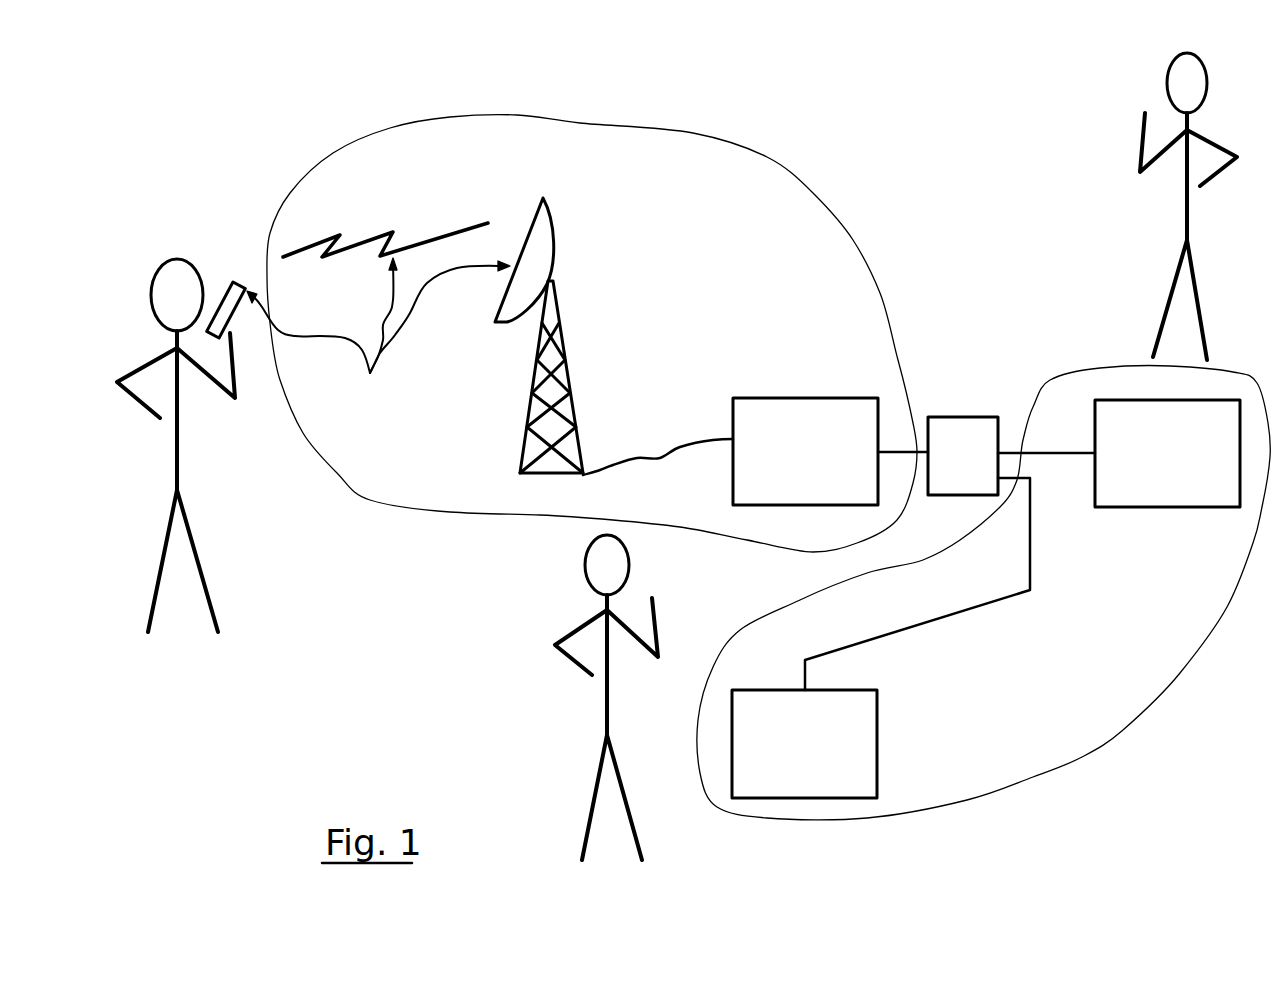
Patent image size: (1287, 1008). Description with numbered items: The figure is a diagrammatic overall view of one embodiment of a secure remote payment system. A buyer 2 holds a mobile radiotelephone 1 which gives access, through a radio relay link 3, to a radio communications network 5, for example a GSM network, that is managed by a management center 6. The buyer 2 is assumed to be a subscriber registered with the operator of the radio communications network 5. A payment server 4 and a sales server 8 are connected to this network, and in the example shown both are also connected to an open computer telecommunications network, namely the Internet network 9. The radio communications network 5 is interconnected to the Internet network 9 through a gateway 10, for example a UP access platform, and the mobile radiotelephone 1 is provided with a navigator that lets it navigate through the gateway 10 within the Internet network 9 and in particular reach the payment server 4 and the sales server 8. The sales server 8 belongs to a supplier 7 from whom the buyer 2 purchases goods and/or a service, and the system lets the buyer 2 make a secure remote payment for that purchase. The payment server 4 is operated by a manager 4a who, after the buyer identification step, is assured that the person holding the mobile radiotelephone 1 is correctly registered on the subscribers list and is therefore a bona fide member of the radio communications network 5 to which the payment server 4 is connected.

The mobile radiotelephone 1 is at (222, 290).
The buyer 2 is at (162, 257).
The radio relay link 3 is at (378, 313).
The payment server 4 is at (853, 733).
The manager of the payment server 4a is at (587, 585).
The radio communications network 5 is at (767, 157).
The management center 6 is at (813, 422).
The supplier 7 is at (1153, 88).
The sales server 8 is at (1175, 510).
The Internet network 9 is at (1125, 730).
The gateway 10 is at (960, 423).